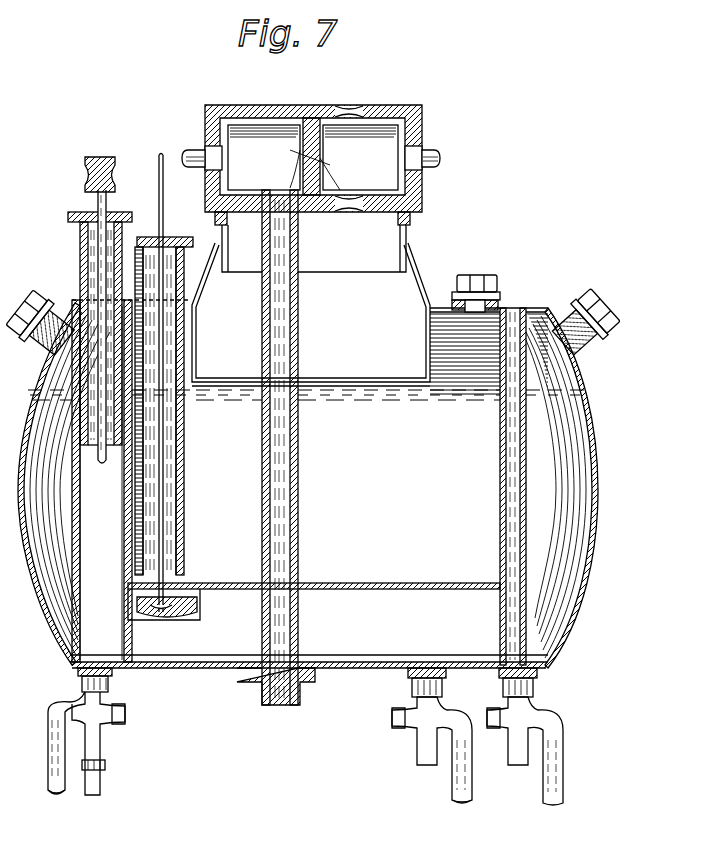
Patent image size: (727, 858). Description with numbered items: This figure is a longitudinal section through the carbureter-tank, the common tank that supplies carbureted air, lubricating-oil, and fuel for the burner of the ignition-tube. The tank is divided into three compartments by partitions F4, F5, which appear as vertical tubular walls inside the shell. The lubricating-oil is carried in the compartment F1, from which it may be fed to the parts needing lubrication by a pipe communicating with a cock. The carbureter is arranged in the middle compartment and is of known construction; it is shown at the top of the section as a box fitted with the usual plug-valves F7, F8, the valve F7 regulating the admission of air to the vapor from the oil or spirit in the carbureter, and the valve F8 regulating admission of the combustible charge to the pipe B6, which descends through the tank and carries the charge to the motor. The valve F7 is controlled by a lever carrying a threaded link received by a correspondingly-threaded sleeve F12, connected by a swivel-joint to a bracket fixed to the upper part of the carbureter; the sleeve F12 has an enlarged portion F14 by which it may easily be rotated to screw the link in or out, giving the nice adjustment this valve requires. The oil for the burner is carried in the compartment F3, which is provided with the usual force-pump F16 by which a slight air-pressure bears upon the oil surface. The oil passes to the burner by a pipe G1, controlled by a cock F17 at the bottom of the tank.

The plug-valve F8 is at (188, 148).
The plug-valve F7 is at (426, 148).
The pipe B6 is at (248, 458).
The compartment F1 is at (588, 420).
The partition F4 is at (586, 496).
The threaded sleeve F12 is at (355, 431).
The enlarged portion F14 is at (497, 572).
The compartment F3 is at (108, 500).
The partition F5 is at (110, 603).
The force-pump F16 is at (518, 716).
The cock F17 is at (81, 731).
The pipe G1 is at (102, 779).